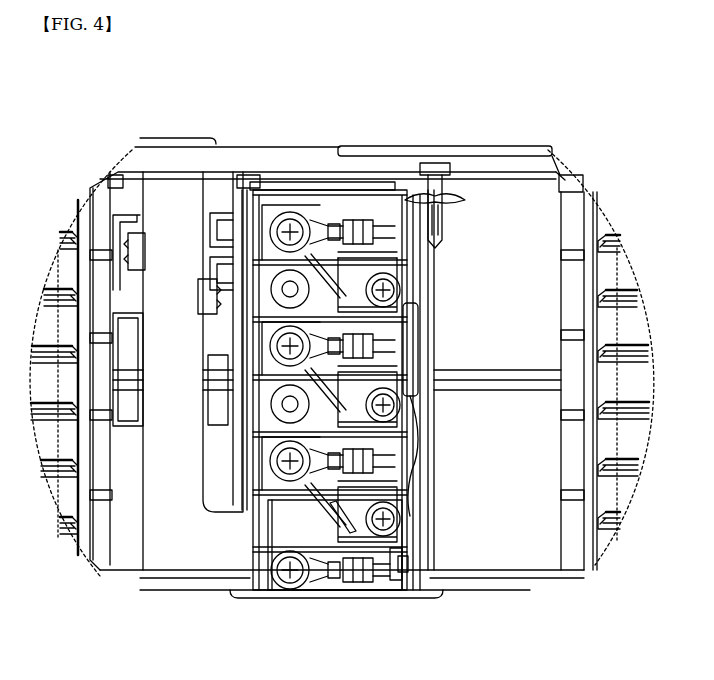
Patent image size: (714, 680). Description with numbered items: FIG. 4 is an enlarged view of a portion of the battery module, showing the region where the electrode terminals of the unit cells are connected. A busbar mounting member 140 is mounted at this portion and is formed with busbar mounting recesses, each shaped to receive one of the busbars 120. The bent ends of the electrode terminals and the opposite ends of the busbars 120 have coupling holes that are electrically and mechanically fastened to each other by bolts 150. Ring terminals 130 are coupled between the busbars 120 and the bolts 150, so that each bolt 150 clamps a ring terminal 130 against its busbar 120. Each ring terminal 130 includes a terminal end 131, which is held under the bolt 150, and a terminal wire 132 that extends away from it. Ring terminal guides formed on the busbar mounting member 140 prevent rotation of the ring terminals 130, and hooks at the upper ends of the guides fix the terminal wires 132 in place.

The busbar 120 is at (350, 277).
The ring terminal 130 is at (315, 586).
The terminal end 131 is at (272, 585).
The terminal wire 132 is at (395, 568).
The busbar mounting member 140 is at (326, 184).
The bolt 150 is at (285, 229).